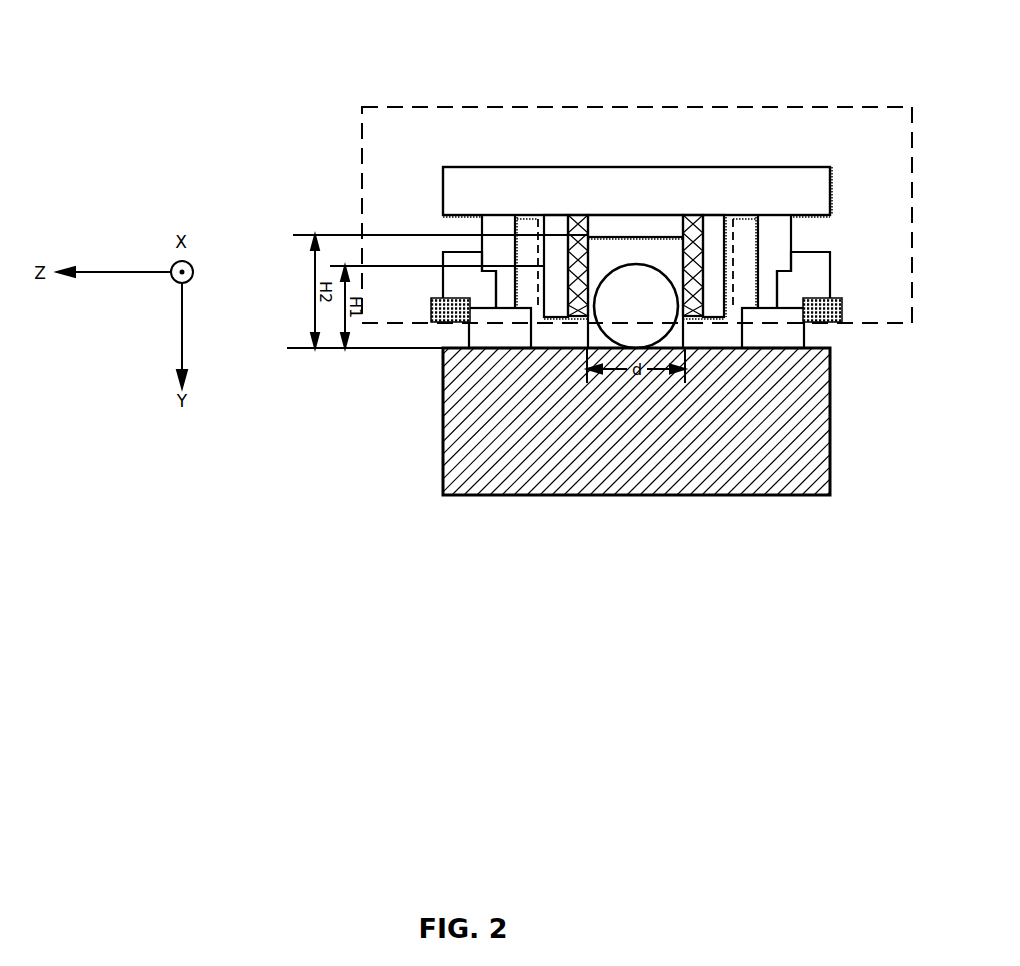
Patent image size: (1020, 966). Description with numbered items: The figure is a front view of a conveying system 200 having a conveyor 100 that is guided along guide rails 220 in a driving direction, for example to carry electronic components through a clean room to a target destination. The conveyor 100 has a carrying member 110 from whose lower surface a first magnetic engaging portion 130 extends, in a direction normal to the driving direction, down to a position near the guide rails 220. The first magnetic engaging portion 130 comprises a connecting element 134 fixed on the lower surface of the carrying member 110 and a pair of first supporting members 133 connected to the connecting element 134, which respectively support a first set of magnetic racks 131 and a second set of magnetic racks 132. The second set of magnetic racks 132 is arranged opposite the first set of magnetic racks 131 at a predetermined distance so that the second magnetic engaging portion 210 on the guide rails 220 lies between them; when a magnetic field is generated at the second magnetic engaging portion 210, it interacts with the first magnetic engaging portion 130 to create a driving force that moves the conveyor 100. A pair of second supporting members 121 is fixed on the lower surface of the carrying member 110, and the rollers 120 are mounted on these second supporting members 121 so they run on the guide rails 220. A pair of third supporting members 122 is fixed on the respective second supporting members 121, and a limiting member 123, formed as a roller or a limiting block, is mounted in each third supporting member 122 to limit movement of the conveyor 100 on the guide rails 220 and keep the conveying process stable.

The conveyor 100 is at (807, 107).
The carrying member 110 is at (776, 167).
The rollers 120 is at (500, 308).
The second supporting members 121 is at (480, 226).
The third supporting members 122 is at (452, 252).
The limiting member 123 is at (430, 304).
The first magnetic engaging portion 130 is at (628, 236).
The first set of magnetic racks 131 is at (593, 250).
The second set of magnetic racks 132 is at (697, 216).
The first supporting members 133 is at (552, 253).
The connecting element 134 is at (666, 226).
The conveying system 200 is at (617, 57).
The second magnetic engaging portion 210 is at (640, 264).
The guide rails 220 is at (468, 326).